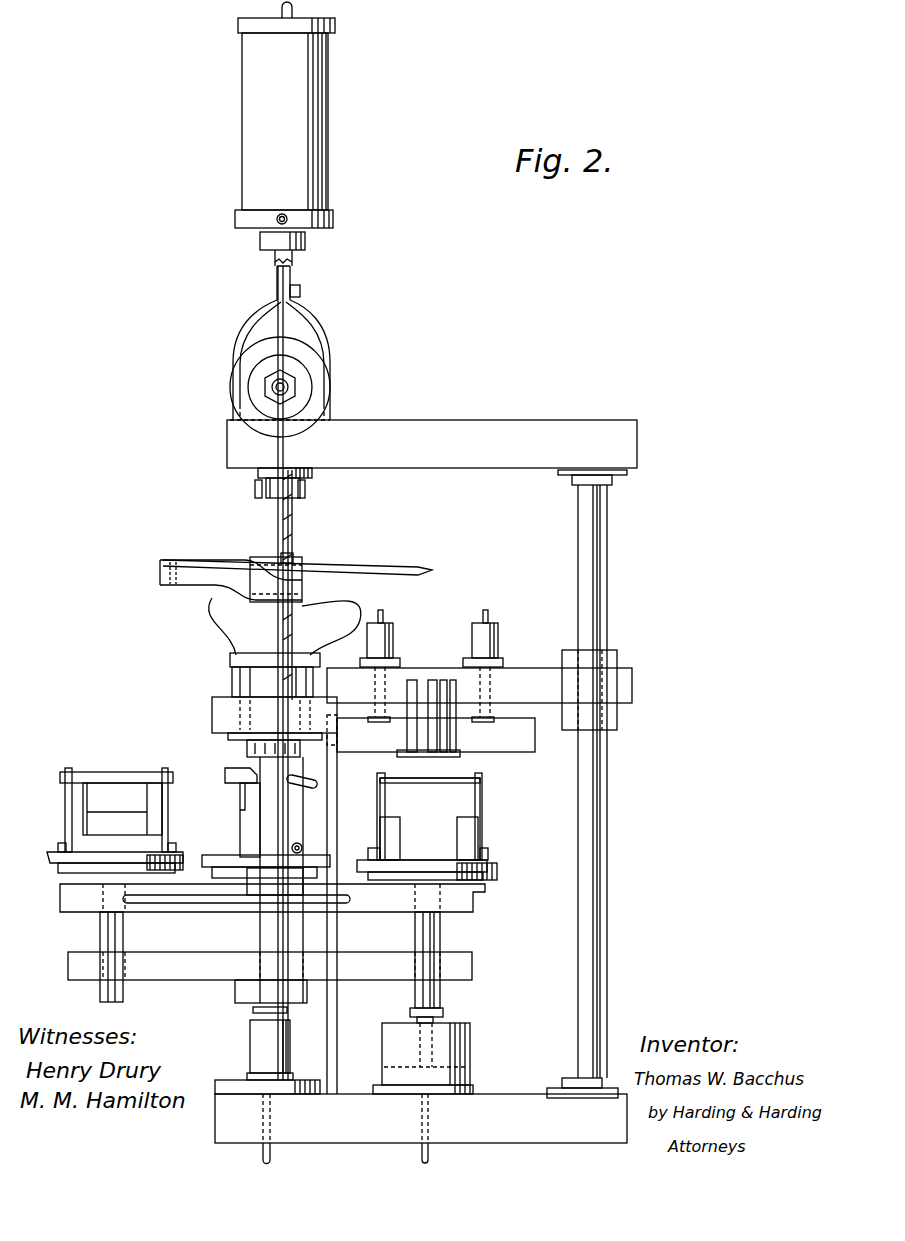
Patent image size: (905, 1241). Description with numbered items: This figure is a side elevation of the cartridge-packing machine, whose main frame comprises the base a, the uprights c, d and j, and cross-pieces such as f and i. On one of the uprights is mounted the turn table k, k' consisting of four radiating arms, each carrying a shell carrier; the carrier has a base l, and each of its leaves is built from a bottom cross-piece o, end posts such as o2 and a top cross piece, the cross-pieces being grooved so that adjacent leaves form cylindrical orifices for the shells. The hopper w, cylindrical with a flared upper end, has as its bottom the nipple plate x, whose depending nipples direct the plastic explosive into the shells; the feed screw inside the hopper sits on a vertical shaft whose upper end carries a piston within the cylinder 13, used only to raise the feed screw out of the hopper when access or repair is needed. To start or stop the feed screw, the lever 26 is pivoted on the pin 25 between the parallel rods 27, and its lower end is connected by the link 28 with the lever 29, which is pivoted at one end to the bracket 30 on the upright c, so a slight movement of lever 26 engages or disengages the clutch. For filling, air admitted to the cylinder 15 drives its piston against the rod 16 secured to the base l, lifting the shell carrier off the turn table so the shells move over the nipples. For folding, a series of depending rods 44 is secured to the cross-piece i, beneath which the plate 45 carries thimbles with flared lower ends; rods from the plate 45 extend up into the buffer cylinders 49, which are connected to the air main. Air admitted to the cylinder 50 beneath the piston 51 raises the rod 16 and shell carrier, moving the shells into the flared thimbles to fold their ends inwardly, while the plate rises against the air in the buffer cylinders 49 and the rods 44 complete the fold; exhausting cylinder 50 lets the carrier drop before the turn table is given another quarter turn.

The cylinder 13 is at (285, 134).
The lever 26 is at (284, 353).
The cross-piece f is at (432, 444).
The parallel rods 27 is at (258, 488).
The pin 25 is at (268, 494).
The link 28 is at (296, 556).
The lever 29 is at (348, 566).
The bracket 30 is at (200, 584).
The hopper w is at (285, 626).
The upright c is at (270, 633).
The nipple plate x is at (232, 740).
The cross-piece i is at (520, 680).
The plate 45 is at (431, 733).
The depending rods 44 is at (418, 682).
The buffer cylinders 49 is at (380, 640).
The upright d is at (600, 608).
The upright j is at (272, 812).
The bottom cross-piece o is at (117, 810).
The base l is at (52, 861).
The end post o2 is at (428, 816).
The turn table k is at (272, 898).
The rod 16 is at (104, 921).
The turn table k' is at (270, 966).
The cylinder 15 is at (251, 1034).
The cylinder 50 is at (395, 1040).
The piston 51 is at (395, 1082).
The base a is at (421, 1129).